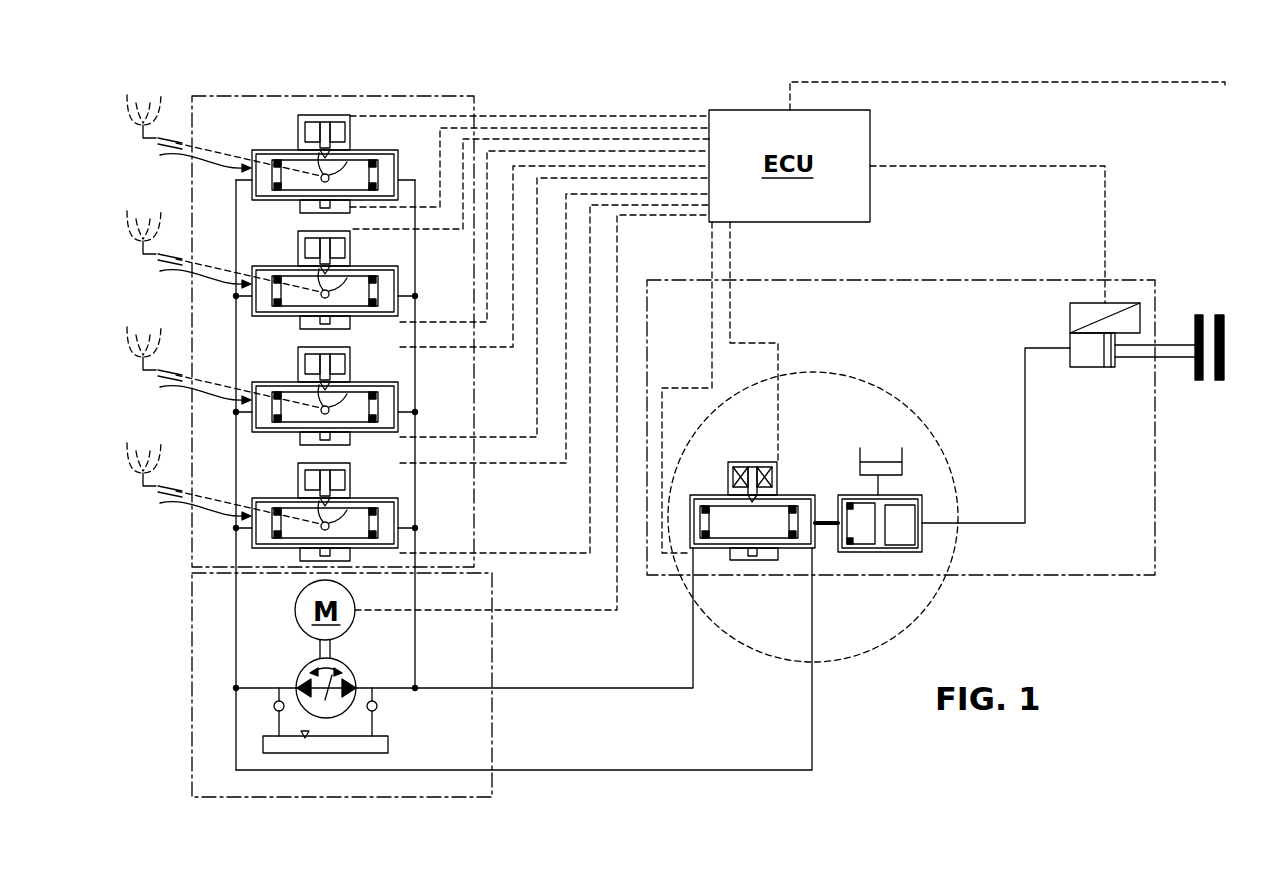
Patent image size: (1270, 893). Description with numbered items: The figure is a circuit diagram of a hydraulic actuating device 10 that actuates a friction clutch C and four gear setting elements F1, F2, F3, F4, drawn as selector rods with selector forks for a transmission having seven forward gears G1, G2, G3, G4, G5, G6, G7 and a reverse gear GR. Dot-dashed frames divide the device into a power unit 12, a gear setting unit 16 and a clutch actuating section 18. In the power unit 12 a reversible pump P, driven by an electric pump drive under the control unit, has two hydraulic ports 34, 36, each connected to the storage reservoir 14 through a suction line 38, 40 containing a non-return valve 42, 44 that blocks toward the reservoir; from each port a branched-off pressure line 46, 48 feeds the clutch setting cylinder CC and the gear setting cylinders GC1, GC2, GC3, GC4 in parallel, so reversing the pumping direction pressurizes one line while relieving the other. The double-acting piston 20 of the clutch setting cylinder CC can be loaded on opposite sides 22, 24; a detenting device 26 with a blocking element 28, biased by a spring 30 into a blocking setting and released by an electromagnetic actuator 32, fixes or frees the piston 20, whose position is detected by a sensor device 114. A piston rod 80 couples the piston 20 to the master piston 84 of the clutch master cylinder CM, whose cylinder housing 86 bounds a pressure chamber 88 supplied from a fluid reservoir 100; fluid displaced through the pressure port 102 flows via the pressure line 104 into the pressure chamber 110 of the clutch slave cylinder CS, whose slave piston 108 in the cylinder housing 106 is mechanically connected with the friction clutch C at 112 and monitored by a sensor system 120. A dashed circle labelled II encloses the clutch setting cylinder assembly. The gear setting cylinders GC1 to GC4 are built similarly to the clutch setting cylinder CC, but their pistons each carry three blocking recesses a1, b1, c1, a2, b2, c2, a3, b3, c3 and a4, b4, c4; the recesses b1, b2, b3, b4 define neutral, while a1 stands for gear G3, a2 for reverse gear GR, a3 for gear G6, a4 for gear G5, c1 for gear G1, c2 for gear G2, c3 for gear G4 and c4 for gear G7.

The hydraulic actuating device 10 is at (1172, 198).
The power unit 12 is at (495, 676).
The storage reservoir 14 is at (389, 754).
The gear setting unit 16 is at (355, 96).
The clutch actuating section 18 is at (932, 282).
The piston 20 is at (713, 556).
The side of piston 22 is at (692, 562).
The side of piston 24 is at (816, 556).
The detenting device 26 is at (752, 458).
The blocking element 28 is at (780, 492).
The spring 30 is at (760, 462).
The actuator 32 is at (720, 440).
The hydraulic port 34 is at (298, 686).
The hydraulic port 36 is at (350, 681).
The suction line 38 is at (263, 746).
The suction line 40 is at (376, 754).
The non-return valve 42 is at (273, 706).
The non-return valve 44 is at (378, 706).
The pressure line 46 is at (234, 688).
The pressure line 48 is at (408, 686).
The piston rod 80 is at (796, 506).
The master piston 84 is at (862, 528).
The cylinder housing 86 is at (906, 550).
The pressure chamber 88 is at (900, 525).
The fluid reservoir 100 is at (878, 462).
The pressure port 102 is at (920, 512).
The pressure line 104 is at (1003, 521).
The cylinder housing 106 is at (1070, 340).
The slave piston 108 is at (1112, 370).
The pressure chamber 110 is at (1085, 360).
The connection to friction clutch 112 is at (1166, 346).
The sensor device 114 is at (762, 563).
The sensor system 120 is at (1128, 300).
The gear setting element F1 is at (144, 84).
The gear setting element F2 is at (144, 200).
The gear setting element F3 is at (144, 316).
The gear setting element F4 is at (144, 432).
The gear setting cylinder GC1 is at (264, 154).
The gear setting cylinder GC2 is at (264, 270).
The gear setting cylinder GC3 is at (264, 386).
The gear setting cylinder GC4 is at (264, 502).
The forward gear G1 is at (217, 140).
The forward gear G2 is at (217, 256).
The forward gear G3 is at (417, 140).
The forward gear G4 is at (217, 372).
The forward gear G5 is at (437, 488).
The forward gear G6 is at (437, 372).
The forward gear G7 is at (217, 488).
The reverse gear GR is at (437, 256).
The blocking recess a1 is at (315, 160).
The blocking recess b1 is at (330, 178).
The blocking recess c1 is at (345, 162).
The blocking recess a2 is at (315, 276).
The blocking recess b2 is at (330, 294).
The blocking recess c2 is at (345, 278).
The blocking recess a3 is at (315, 392).
The blocking recess b3 is at (330, 410).
The blocking recess c3 is at (345, 394).
The blocking recess a4 is at (315, 508).
The blocking recess b4 is at (330, 526).
The blocking recess c4 is at (345, 510).
The clutch setting cylinder CC is at (704, 490).
The clutch master cylinder CM is at (846, 490).
The clutch slave cylinder CS is at (1096, 374).
The friction clutch C is at (1211, 394).
The pump P is at (311, 668).
The detail II is at (922, 402).